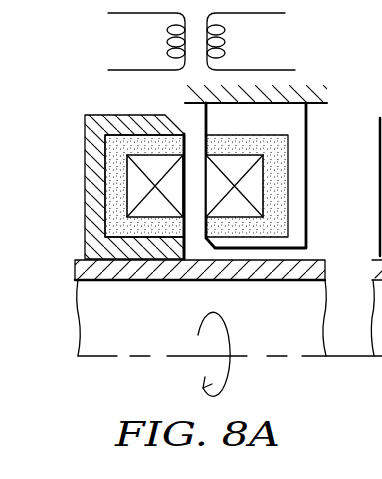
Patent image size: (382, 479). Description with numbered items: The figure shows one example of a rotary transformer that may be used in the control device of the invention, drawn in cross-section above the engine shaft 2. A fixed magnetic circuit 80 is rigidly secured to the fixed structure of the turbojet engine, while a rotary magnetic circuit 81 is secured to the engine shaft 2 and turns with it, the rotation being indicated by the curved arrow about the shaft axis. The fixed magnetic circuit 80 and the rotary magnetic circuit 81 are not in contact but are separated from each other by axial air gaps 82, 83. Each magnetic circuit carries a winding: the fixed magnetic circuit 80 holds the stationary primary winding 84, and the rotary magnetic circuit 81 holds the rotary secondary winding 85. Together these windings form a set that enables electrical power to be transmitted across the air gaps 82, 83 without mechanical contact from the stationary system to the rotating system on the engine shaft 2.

The engine shaft 2 is at (312, 262).
The fixed magnetic circuit 80 is at (280, 162).
The rotary magnetic circuit 81 is at (108, 155).
The axial air gap 82 is at (193, 135).
The axial air gap 83 is at (197, 240).
The stationary primary winding 84 is at (260, 190).
The rotary secondary winding 85 is at (133, 199).